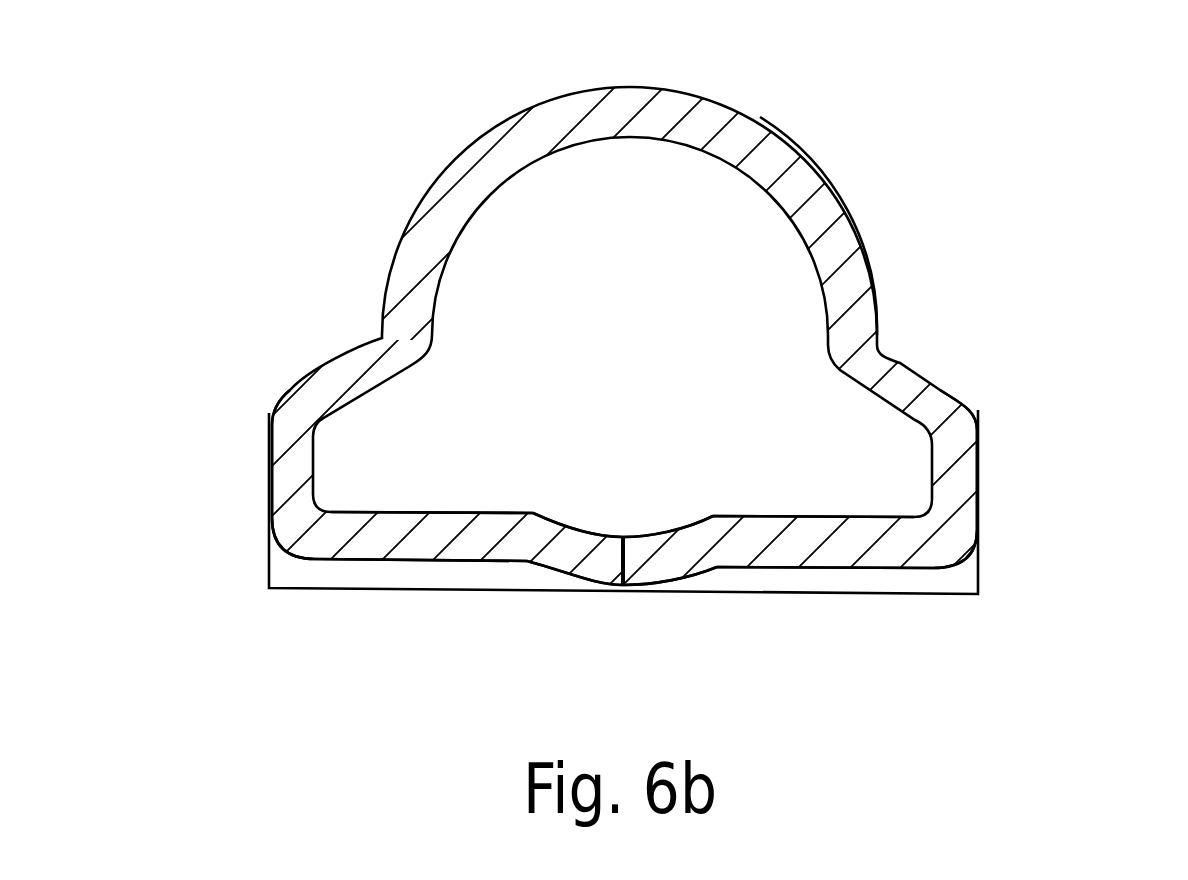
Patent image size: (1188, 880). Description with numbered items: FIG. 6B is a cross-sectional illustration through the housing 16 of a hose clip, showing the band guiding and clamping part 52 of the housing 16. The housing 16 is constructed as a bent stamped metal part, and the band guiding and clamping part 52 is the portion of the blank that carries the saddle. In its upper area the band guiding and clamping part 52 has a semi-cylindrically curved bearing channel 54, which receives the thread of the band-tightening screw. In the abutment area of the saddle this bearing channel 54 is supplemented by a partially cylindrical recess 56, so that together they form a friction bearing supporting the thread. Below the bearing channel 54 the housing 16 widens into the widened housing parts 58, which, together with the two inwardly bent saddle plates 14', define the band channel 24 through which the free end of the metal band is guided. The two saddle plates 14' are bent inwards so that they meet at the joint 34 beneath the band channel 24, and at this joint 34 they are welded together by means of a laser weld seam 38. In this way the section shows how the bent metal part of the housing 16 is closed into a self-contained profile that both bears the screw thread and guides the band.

The housing 16 is at (668, 104).
The band guiding and clamping part 52 is at (836, 237).
The bearing channel 54 is at (743, 174).
The partially cylindrical recess 56 is at (655, 533).
The widened housing parts 58 is at (947, 482).
The saddle plates 14' is at (624, 605).
The laser weld seam 38 is at (617, 560).
The joint 34 is at (630, 587).
The band channel 24 is at (895, 485).